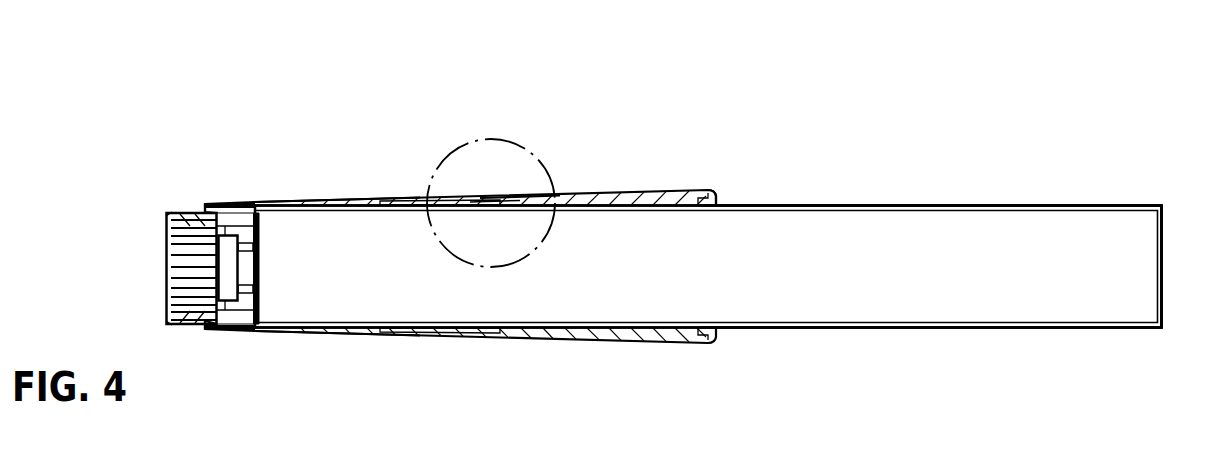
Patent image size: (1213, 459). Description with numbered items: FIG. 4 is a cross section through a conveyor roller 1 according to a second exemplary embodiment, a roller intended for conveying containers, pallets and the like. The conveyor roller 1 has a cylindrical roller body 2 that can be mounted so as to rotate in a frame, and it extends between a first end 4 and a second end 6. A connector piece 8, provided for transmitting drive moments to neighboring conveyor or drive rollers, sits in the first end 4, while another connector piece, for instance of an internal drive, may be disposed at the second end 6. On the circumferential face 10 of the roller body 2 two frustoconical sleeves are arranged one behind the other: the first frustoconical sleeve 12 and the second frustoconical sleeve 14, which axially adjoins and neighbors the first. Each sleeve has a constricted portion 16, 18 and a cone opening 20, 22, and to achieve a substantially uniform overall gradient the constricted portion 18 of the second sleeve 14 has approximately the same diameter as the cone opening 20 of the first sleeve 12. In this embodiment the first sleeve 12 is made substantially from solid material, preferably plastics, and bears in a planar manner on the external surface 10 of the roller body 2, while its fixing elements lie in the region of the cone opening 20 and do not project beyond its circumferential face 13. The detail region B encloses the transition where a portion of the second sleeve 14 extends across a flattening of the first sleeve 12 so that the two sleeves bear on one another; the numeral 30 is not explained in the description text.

The conveyor roller 1 is at (852, 350).
The roller body 2 is at (896, 205).
The first end 4 is at (256, 186).
The second end 6 is at (1148, 197).
The connector piece 8 is at (189, 203).
The circumferential face 10 is at (964, 205).
The first frustoconical sleeve 12 is at (376, 203).
The circumferential face of the sleeve 13 is at (409, 197).
The second frustoconical sleeve 14 is at (657, 192).
The constricted portion 16 is at (310, 345).
The constricted portion 18 is at (566, 192).
The cone opening 20 is at (440, 345).
The cone opening 22 is at (717, 175).
The housing element 30 is at (470, 393).
The detail region B is at (474, 137).